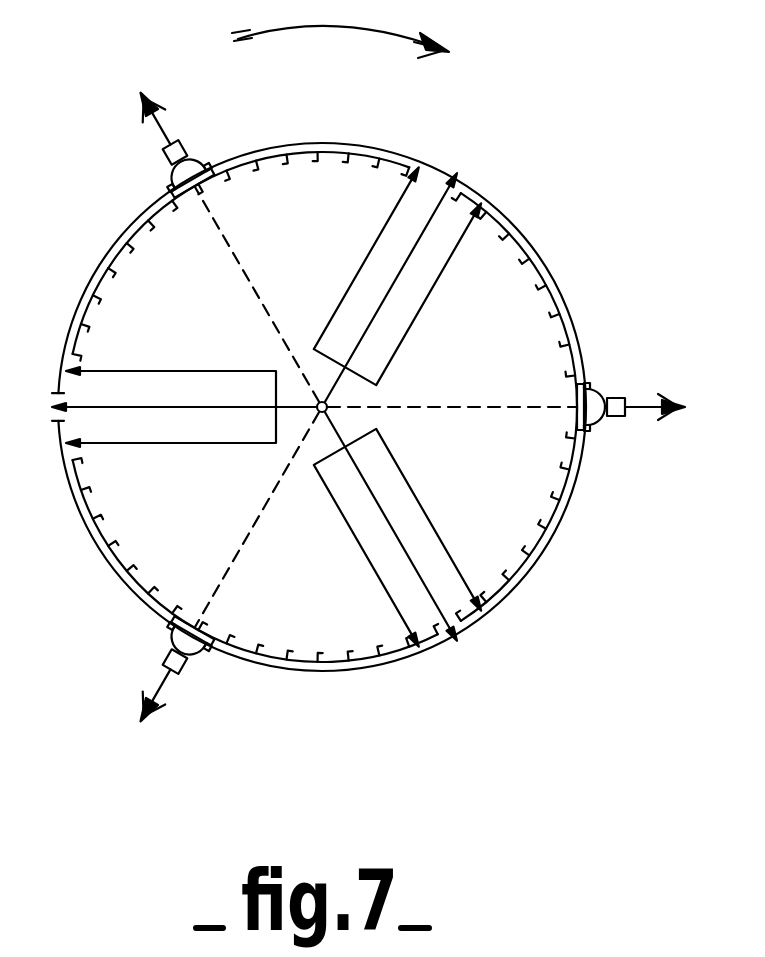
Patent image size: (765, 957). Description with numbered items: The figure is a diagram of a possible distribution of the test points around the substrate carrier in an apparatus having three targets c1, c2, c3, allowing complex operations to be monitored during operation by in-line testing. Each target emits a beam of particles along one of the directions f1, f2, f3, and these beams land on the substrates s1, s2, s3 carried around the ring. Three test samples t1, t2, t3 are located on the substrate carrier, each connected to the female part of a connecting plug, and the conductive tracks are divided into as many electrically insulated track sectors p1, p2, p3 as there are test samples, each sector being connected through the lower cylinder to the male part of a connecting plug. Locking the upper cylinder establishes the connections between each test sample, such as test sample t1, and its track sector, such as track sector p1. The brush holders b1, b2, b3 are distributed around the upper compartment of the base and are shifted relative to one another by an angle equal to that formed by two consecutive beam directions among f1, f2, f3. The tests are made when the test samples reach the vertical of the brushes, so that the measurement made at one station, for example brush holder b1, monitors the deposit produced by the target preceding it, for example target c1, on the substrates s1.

The brush holder b1 is at (169, 135).
The brush holder b2 is at (636, 396).
The brush holder b3 is at (171, 678).
The test sample t1 is at (198, 188).
The test sample t2 is at (560, 405).
The test sample t3 is at (198, 632).
The track sector p1 is at (187, 268).
The track sector p2 is at (470, 407).
The track sector p3 is at (187, 561).
The substrates s1 is at (241, 256).
The substrates s2 is at (514, 405).
The substrates s3 is at (258, 560).
The direction of beam of particles f1 is at (184, 407).
The direction of beam of particles f2 is at (390, 287).
The direction of beam of particles f3 is at (390, 526).
The target c1 is at (257, 296).
The target c2 is at (452, 390).
The target c3 is at (278, 519).